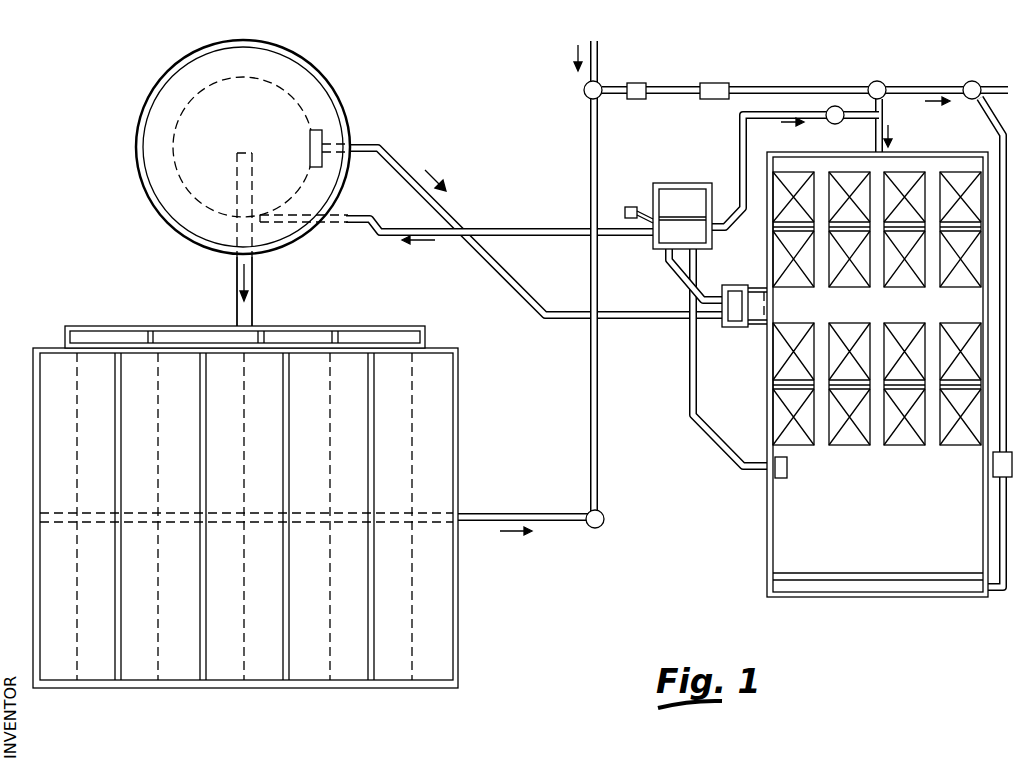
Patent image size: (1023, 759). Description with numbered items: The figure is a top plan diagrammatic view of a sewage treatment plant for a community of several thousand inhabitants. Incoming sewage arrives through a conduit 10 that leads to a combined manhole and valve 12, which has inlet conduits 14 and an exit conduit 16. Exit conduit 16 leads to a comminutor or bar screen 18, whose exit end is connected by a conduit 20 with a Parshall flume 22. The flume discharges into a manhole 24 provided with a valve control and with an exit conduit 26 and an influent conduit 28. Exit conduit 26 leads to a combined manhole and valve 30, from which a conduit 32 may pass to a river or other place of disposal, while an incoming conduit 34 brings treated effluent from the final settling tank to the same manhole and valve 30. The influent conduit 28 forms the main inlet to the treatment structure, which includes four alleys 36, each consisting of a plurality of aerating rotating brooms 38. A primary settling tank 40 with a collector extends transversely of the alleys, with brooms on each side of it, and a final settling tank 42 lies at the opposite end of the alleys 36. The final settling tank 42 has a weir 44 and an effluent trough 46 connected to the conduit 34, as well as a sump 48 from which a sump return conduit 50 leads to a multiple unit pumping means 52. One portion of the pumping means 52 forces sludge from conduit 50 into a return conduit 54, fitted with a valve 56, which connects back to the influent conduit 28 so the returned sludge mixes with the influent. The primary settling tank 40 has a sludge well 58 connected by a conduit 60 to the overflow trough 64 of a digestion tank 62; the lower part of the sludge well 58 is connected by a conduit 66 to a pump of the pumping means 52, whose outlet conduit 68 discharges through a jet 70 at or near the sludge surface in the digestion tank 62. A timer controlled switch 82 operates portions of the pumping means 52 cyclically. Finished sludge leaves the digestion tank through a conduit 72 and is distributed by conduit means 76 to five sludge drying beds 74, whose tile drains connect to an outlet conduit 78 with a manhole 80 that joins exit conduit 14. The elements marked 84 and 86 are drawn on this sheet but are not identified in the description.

The conduit 10 is at (598, 54).
The combined manhole and valve 12 is at (584, 91).
The inlet conduits 14 is at (590, 143).
The exit conduit 16 is at (630, 86).
The comminutor or bar screen 18 is at (630, 100).
The conduit 20 is at (680, 96).
The Parshall flume 22 is at (714, 84).
The manhole 24 is at (870, 84).
The exit conduit 26 is at (890, 88).
The influent conduit 28 is at (884, 125).
The combined manhole and valve 30 is at (966, 84).
The conduit 32 is at (998, 90).
The incoming conduit 34 is at (1000, 132).
The alleys 36 is at (800, 447).
The aerating rotating brooms 38 is at (861, 334).
The primary settling tank 40 is at (865, 374).
The final settling tank 42 is at (808, 556).
The weir 44 is at (858, 572).
The effluent trough 46 is at (912, 592).
The sump 48 is at (788, 478).
The sump return conduit 50 is at (712, 436).
The multiple unit pumping means 52 is at (682, 216).
The return conduit 54 is at (740, 156).
The valve 56 is at (834, 124).
The sludge well 58 is at (754, 330).
The conduit 60 is at (637, 318).
The digestion tank 62 is at (282, 118).
The overflow trough 64 is at (310, 154).
The conduit 66 is at (672, 286).
The conduit 68 is at (504, 229).
The jet 70 is at (268, 224).
The conduit 72 is at (254, 298).
The sludge drying beds 74 is at (245, 518).
The conduit means 76 is at (64, 336).
The outlet conduit 78 is at (525, 516).
The manhole 80 is at (598, 528).
The timer controlled switch 82 is at (630, 207).
The switch 84 is at (992, 472).
The housing 86 is at (694, 186).